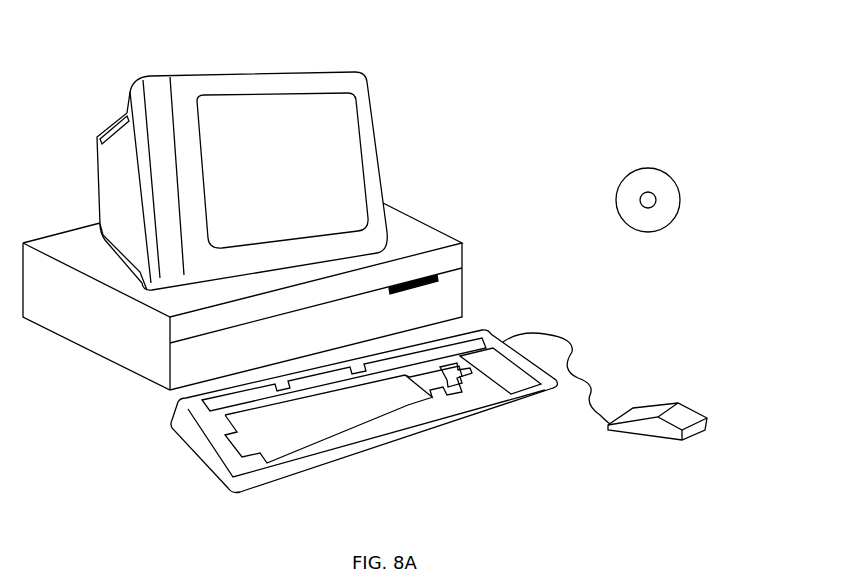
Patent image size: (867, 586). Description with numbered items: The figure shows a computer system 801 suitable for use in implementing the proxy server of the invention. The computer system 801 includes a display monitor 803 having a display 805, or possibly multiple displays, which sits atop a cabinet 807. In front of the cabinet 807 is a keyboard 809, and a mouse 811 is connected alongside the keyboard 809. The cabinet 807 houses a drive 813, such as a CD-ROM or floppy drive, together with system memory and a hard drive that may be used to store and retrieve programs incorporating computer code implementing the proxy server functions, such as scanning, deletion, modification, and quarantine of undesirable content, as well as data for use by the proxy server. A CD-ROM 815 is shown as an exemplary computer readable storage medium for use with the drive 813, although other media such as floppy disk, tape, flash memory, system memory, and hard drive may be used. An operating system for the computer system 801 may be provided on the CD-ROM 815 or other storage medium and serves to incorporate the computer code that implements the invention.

The computer system 801 is at (575, 48).
The display monitor 803 is at (383, 177).
The display 805 is at (343, 133).
The cabinet 807 is at (130, 375).
The keyboard 809 is at (368, 452).
The mouse 811 is at (695, 412).
The drive 813 is at (438, 274).
The CD-ROM 815 is at (667, 168).